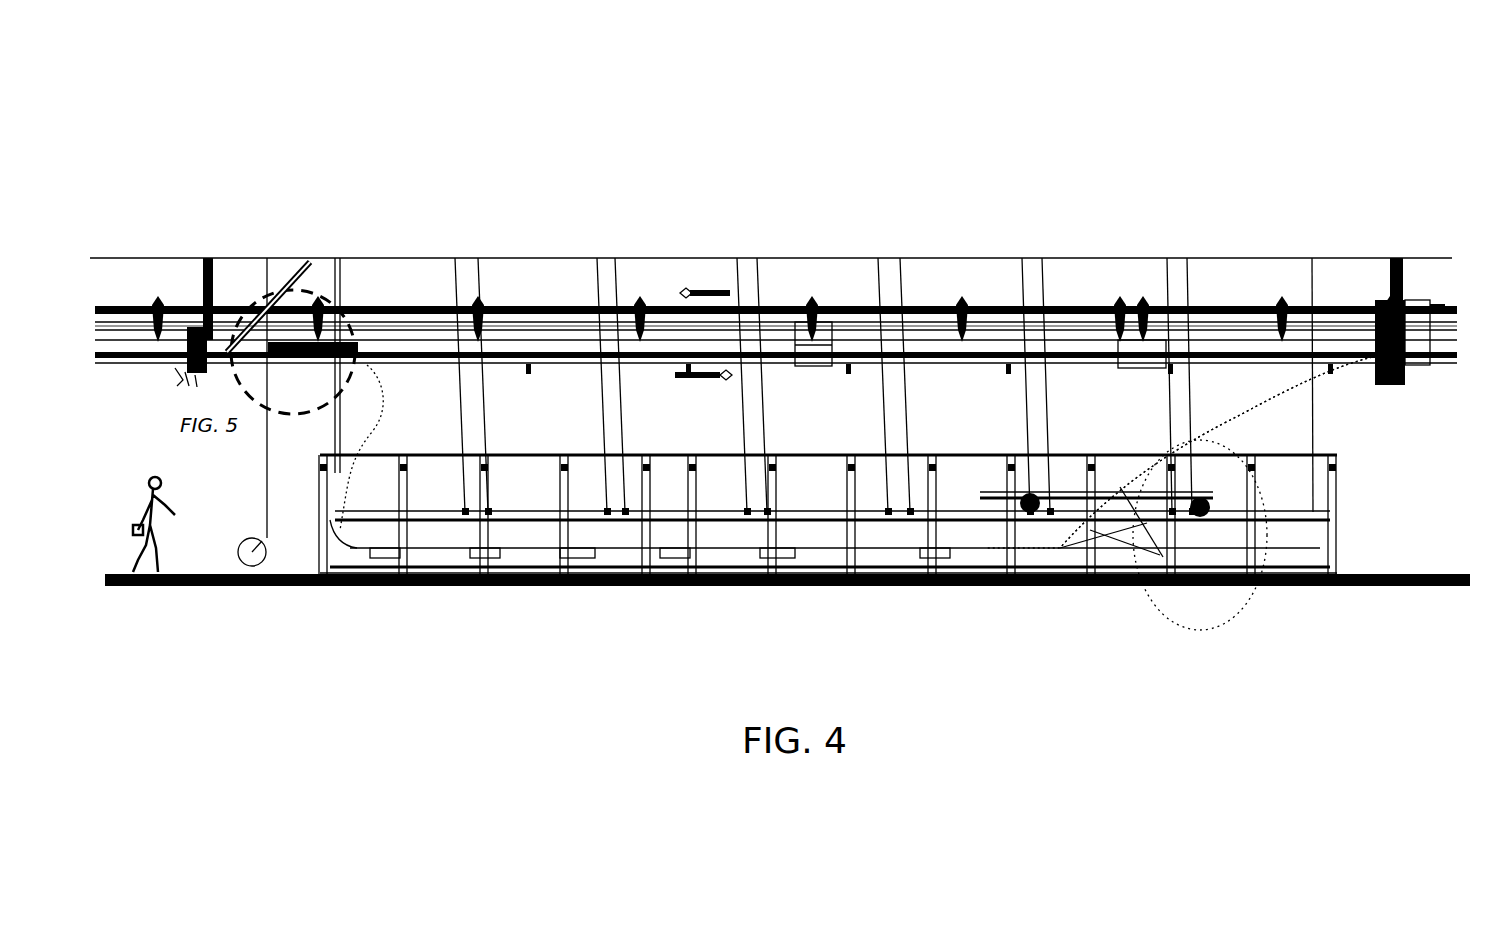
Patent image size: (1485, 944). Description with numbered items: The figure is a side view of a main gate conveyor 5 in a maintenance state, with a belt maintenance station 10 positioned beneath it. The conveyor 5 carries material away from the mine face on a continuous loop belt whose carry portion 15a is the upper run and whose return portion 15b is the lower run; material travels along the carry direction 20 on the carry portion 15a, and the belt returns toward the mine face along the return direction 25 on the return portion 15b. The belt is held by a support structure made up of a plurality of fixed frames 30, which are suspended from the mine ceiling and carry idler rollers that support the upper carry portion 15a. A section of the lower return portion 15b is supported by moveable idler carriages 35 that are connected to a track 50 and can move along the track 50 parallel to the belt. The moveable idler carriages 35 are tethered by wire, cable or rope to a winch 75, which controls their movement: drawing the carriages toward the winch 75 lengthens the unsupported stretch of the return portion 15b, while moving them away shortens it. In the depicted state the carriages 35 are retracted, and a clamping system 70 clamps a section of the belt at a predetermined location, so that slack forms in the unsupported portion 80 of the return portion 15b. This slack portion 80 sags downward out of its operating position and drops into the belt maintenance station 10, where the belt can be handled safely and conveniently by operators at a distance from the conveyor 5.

The conveyor 5 is at (540, 226).
The belt maintenance station 10 is at (470, 602).
The carry portion of the belt 15a is at (1097, 325).
The return portion of the belt 15b is at (1278, 395).
The carry direction 20 is at (716, 290).
The return direction 25 is at (695, 385).
The fixed frames 30 is at (317, 343).
The moveable idler carriages 35 is at (309, 347).
The track 50 is at (357, 350).
The clamping system 70 is at (1368, 356).
The winch 75 is at (245, 566).
The unsupported portion of the belt 80 is at (363, 440).